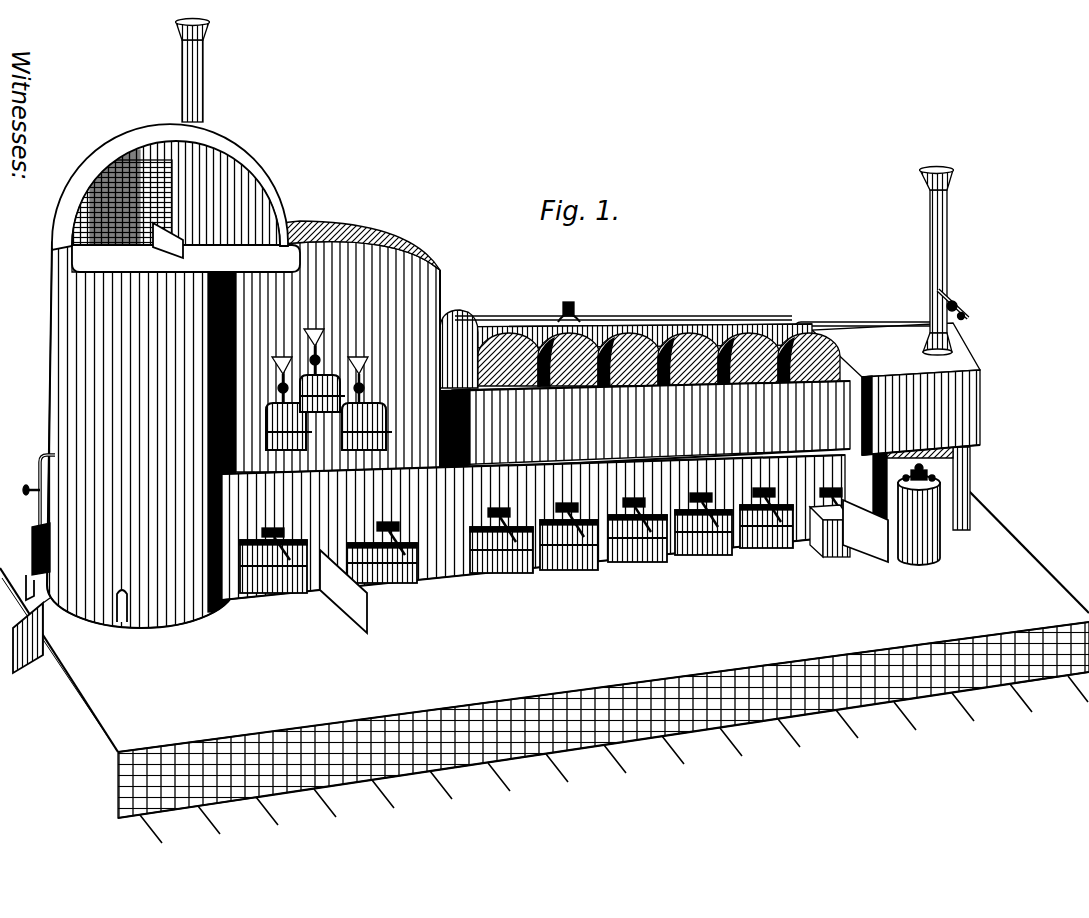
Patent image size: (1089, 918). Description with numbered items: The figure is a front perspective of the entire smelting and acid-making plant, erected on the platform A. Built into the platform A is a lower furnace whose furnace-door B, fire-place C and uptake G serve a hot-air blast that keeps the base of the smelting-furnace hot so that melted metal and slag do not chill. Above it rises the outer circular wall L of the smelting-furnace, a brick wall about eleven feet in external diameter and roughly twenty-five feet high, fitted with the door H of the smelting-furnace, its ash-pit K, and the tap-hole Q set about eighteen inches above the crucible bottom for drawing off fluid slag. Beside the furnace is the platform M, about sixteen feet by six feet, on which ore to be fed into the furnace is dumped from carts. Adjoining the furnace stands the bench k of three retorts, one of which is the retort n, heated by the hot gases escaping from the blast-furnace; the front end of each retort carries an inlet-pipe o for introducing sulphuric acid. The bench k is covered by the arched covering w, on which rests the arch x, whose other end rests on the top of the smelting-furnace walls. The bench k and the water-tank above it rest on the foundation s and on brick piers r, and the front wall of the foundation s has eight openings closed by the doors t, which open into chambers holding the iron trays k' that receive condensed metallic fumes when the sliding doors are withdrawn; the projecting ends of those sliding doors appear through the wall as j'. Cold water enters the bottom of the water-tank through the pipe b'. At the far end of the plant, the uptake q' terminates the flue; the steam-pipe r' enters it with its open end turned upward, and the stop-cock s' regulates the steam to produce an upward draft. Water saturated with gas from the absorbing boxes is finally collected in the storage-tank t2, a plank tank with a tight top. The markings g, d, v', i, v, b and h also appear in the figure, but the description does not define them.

The platform A is at (544, 665).
The outer circular wall of the smelting-furnace L is at (148, 410).
The platform M is at (186, 258).
The arch x is at (170, 187).
The inlet-pipe o is at (168, 240).
The uptake G is at (196, 71).
The tap-hole Q is at (128, 600).
The bench of retorts k is at (336, 342).
The arched covering w is at (336, 241).
The funnels g is at (320, 358).
The piers r is at (329, 401).
The retort n is at (645, 390).
The cylinders d is at (640, 349).
The storage-tank t2 is at (623, 309).
The valve v' is at (577, 306).
The iron trays k' is at (896, 426).
The uptake q' is at (933, 261).
The pipe b' is at (862, 323).
The steam-pipe r' is at (953, 299).
The stop-cock s' is at (970, 308).
The boxes i is at (533, 527).
The ends of sliding doors j' is at (554, 516).
The ash-pit K is at (343, 591).
The box v is at (830, 530).
The doors t is at (865, 531).
The vessel b is at (919, 514).
The pipe h is at (39, 490).
The foundation s is at (27, 485).
The door of the smelting-furnace H is at (32, 549).
The fire-place C is at (22, 587).
The lower furnace-door B is at (25, 635).